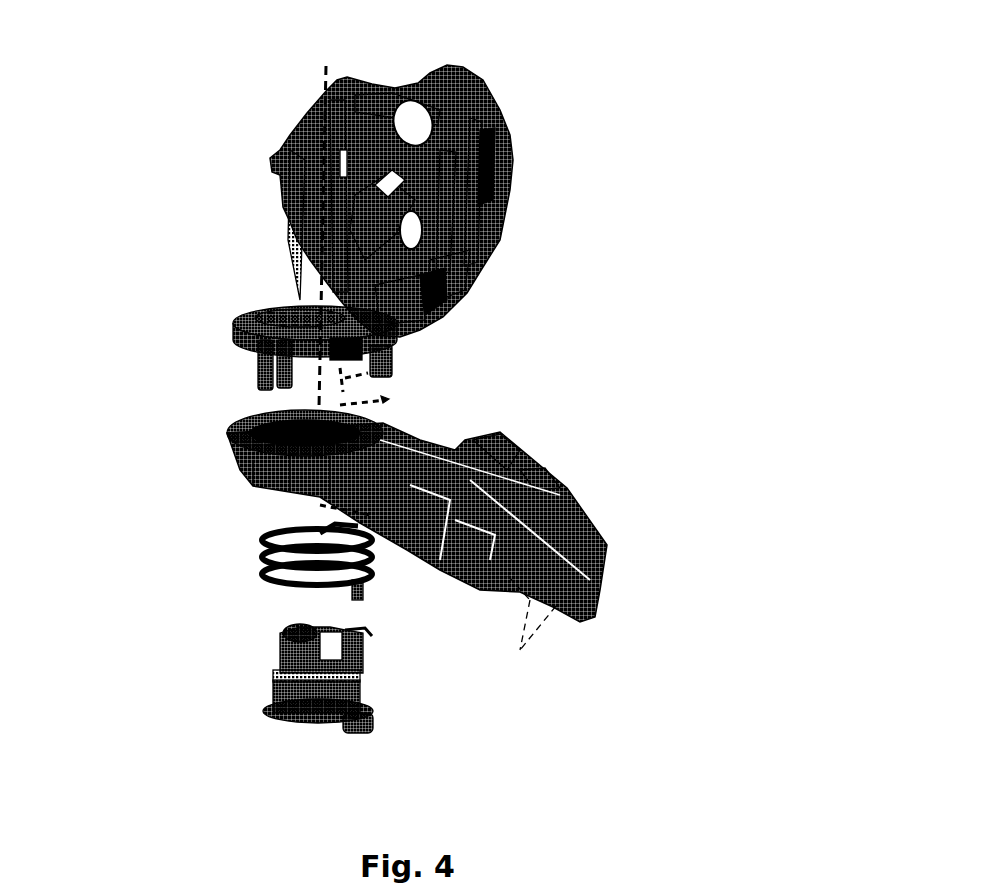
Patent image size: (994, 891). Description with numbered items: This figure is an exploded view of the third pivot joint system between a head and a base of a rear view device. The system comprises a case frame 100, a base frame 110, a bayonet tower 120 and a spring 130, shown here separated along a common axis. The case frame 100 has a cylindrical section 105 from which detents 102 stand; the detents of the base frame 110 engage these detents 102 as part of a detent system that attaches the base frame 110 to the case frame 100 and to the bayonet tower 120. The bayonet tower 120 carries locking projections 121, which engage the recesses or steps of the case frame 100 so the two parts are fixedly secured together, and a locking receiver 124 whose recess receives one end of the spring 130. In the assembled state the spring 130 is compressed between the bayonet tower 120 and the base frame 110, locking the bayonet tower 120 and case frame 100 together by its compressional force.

The case frame 100 is at (535, 125).
The detents 102 is at (395, 362).
The cylindrical section 105 is at (258, 359).
The base frame 110 is at (575, 479).
The bayonet tower 120 is at (292, 666).
The locking projections 121 is at (282, 638).
The locking receiver 124 is at (373, 723).
The spring 130 is at (250, 552).